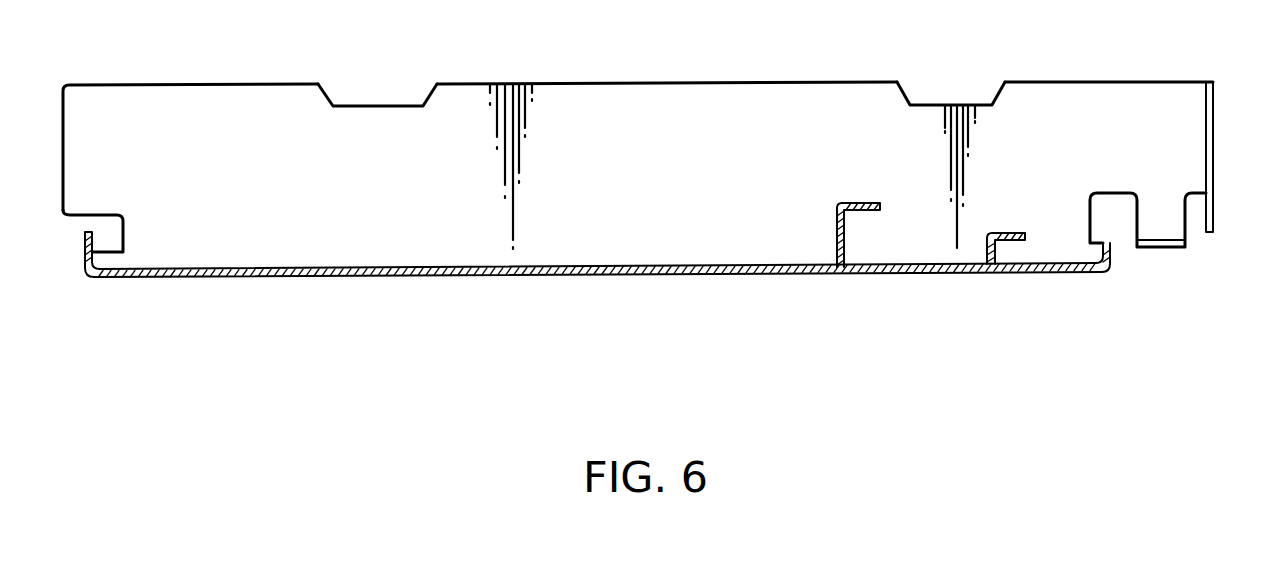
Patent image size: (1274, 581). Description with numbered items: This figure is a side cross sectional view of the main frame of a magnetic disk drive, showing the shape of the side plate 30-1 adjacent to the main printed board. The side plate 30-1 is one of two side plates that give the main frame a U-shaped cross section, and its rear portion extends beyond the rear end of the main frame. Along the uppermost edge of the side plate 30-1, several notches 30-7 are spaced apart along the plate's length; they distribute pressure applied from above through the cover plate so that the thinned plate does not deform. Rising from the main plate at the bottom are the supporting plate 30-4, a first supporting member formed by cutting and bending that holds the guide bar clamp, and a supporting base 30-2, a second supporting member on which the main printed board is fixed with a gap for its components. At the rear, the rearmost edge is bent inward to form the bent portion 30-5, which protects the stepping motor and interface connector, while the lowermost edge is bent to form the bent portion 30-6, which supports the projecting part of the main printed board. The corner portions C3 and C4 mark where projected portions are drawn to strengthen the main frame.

The side plate 30-1 is at (268, 96).
The notches 30-7 is at (408, 105).
The corner portion C3 is at (97, 262).
The corner portion C4 is at (1102, 258).
The supporting plate 30-4 is at (873, 212).
The supporting bases 30-2 is at (1015, 242).
The bent portion 30-6 is at (1165, 247).
The bent portion 30-5 is at (1208, 232).